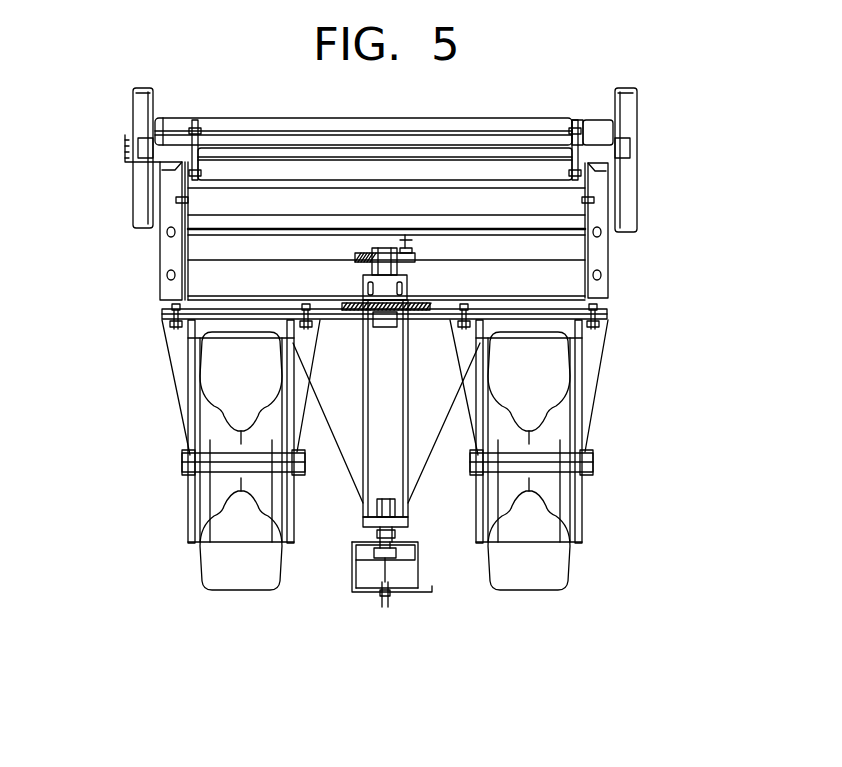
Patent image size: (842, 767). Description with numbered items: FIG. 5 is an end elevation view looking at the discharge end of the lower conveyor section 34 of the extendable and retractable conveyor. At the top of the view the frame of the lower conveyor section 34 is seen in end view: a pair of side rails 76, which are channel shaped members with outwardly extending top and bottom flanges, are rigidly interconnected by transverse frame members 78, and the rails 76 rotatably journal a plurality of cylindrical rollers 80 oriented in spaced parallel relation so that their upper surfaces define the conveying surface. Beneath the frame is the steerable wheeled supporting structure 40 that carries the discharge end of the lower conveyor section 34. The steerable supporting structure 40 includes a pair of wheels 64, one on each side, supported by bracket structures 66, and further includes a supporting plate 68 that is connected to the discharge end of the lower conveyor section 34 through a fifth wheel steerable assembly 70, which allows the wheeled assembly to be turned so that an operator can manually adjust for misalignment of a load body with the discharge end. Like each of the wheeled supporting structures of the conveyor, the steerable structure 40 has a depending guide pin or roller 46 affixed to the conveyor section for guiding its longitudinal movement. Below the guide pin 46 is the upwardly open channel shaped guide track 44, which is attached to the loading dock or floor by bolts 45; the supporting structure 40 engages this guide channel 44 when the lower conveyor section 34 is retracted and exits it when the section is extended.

The lower conveyor section 34 is at (640, 267).
The steerable wheeled supporting structure 40 is at (160, 496).
The guide track 44 is at (350, 588).
The bolts 45 is at (384, 602).
The guide pin or roller 46 is at (407, 556).
The wheels 64 is at (217, 570).
The bracket structures 66 is at (175, 352).
The supporting plate 68 is at (333, 326).
The fifth wheel steerable assembly 70 is at (343, 273).
The side rails 76 is at (622, 181).
The transverse frame members 78 is at (200, 243).
The cylindrical rollers 80 is at (487, 197).